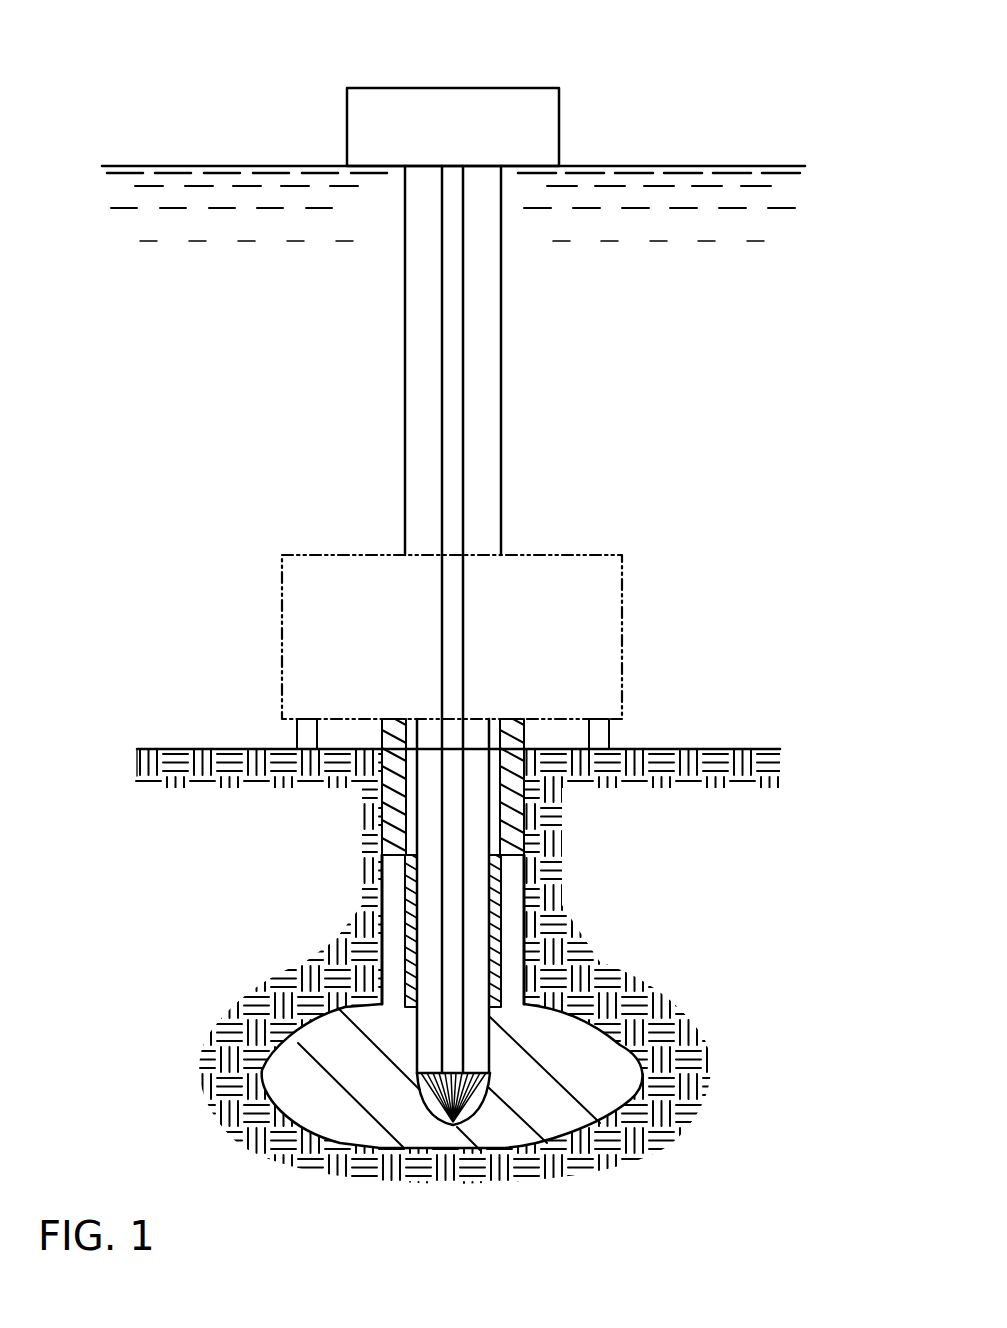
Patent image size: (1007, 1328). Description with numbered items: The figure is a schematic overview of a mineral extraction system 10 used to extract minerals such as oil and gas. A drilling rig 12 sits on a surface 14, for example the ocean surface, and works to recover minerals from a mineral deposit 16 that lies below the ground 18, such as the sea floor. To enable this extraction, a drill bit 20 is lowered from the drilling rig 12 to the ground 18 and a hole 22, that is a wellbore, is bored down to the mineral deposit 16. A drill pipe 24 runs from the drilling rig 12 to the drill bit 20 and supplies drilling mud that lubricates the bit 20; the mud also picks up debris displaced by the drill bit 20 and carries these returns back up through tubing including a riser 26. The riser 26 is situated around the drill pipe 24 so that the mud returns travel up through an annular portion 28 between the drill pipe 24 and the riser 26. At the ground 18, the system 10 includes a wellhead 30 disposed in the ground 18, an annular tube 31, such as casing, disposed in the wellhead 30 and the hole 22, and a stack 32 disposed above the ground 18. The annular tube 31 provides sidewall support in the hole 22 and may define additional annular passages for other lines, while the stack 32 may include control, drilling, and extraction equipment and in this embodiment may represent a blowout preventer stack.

The mineral extraction system 10 is at (116, 48).
The drilling rig 12 is at (400, 87).
The surface 14 is at (152, 165).
The mineral deposit 16 is at (600, 1030).
The ground 18 is at (706, 748).
The drill bit 20 is at (440, 1122).
The hole 22 is at (415, 905).
The drill pipe 24 is at (463, 490).
The riser 26 is at (501, 270).
The annular portion 28 is at (420, 332).
The wellhead 30 is at (383, 820).
The annular tube 31 is at (400, 950).
The stack 32 is at (630, 598).